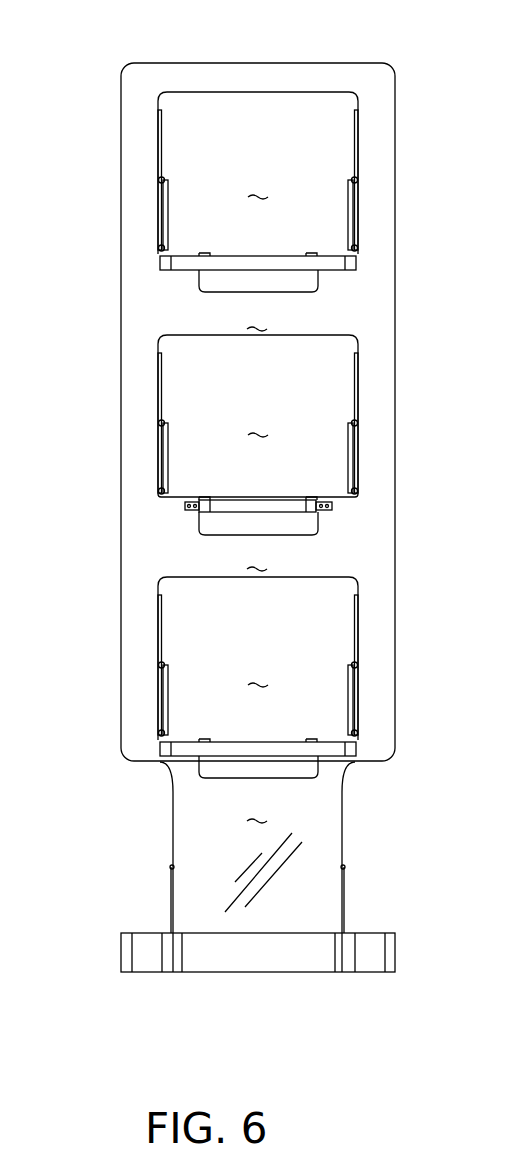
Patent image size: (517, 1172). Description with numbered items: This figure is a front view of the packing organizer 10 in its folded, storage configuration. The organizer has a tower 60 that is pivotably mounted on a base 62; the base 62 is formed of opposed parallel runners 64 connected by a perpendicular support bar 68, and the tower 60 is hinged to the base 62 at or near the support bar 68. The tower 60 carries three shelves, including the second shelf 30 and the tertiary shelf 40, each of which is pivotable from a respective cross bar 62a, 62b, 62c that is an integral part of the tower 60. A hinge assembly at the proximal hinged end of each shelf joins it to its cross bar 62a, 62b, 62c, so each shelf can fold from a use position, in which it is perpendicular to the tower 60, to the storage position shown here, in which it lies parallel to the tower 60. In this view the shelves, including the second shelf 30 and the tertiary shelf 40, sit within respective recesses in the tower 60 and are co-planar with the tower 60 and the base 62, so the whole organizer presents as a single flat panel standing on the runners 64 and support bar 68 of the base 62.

The radiopharmaceutical dispensing system 10 is at (403, 60).
The second shelf 30 is at (187, 272).
The tertiary shelf 40 is at (182, 764).
The tower 60 is at (396, 471).
The base 62 is at (378, 926).
The cross bar 62a is at (318, 762).
The cross bar 62b is at (325, 521).
The cross bar 62c is at (324, 281).
The runners 64 is at (138, 973).
The support bar 68 is at (212, 973).